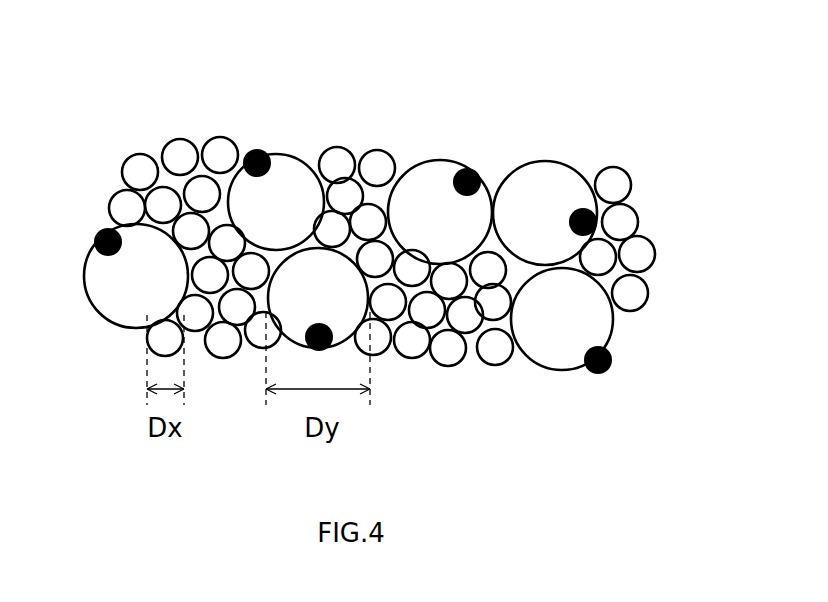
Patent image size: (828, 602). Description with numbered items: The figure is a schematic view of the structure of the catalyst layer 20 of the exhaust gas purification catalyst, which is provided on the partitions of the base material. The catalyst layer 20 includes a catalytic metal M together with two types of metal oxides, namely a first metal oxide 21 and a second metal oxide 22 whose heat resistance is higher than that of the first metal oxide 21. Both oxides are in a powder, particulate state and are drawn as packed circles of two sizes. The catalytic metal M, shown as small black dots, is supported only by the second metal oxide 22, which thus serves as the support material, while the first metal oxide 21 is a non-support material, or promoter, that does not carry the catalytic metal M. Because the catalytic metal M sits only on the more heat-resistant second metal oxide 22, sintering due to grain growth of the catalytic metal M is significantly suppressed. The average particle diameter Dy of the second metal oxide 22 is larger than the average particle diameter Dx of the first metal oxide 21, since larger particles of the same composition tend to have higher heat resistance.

The catalyst layer 20 is at (587, 95).
The first metal oxide 21 is at (178, 146).
The second metal oxide 22 is at (285, 173).
The catalytic metal M is at (480, 166).